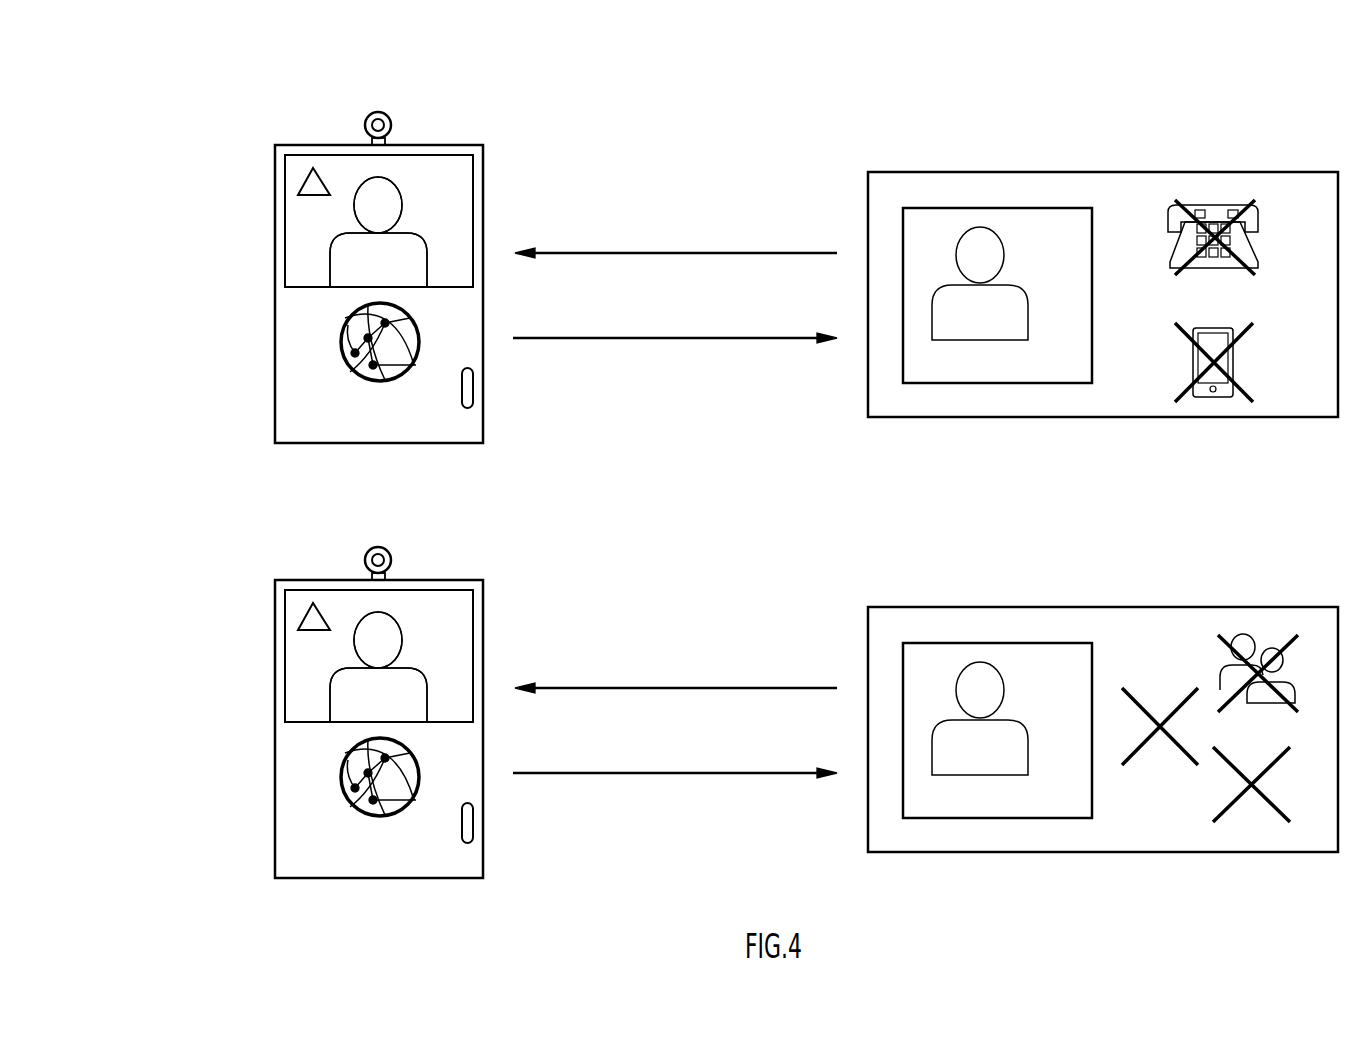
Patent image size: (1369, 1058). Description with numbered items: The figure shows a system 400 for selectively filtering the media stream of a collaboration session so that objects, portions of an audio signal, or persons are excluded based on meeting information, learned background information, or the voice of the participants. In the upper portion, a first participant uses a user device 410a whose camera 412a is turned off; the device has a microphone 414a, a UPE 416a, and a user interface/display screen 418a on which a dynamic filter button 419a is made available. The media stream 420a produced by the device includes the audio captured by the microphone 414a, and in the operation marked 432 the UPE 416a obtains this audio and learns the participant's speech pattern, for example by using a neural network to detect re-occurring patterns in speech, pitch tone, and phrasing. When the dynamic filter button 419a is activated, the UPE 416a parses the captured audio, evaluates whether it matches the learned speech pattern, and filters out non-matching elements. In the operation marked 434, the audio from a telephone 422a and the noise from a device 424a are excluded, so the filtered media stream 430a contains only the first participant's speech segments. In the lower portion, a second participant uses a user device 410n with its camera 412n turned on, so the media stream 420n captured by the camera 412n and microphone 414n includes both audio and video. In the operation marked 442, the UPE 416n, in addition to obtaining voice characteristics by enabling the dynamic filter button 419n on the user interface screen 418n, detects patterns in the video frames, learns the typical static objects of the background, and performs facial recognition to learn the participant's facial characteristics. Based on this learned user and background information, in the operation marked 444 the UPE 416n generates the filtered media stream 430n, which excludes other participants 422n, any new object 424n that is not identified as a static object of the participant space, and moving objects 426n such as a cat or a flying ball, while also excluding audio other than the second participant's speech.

The system 400 is at (92, 68).
The user device 410a is at (252, 132).
The camera 412a is at (393, 127).
The microphone 414a is at (473, 385).
The UPE 416a is at (342, 330).
The user interface/display screen 418a is at (423, 240).
The dynamic filter button 419a is at (307, 180).
The media stream 420a is at (948, 172).
The telephone 422a is at (1253, 252).
The device 424a is at (1233, 358).
The filtered media stream 430a is at (1030, 308).
The operation of obtaining user voice 432 is at (763, 252).
The operation of filtering noise 434 is at (602, 342).
The user device 410n is at (325, 703).
The camera 412n is at (407, 548).
The microphone 414n is at (500, 835).
The UPE 416n is at (319, 777).
The user interface/display screen 418n is at (433, 660).
The dynamic filter button 419n is at (269, 615).
The media stream 420n is at (1103, 705).
The other participants 422n is at (1222, 670).
The new object 424n is at (1157, 703).
The moving objects 426n is at (1213, 802).
The filtered media stream 430n is at (997, 730).
The operation of detecting patterns 442 is at (676, 660).
The operation of generating filtered media stream 444 is at (675, 769).